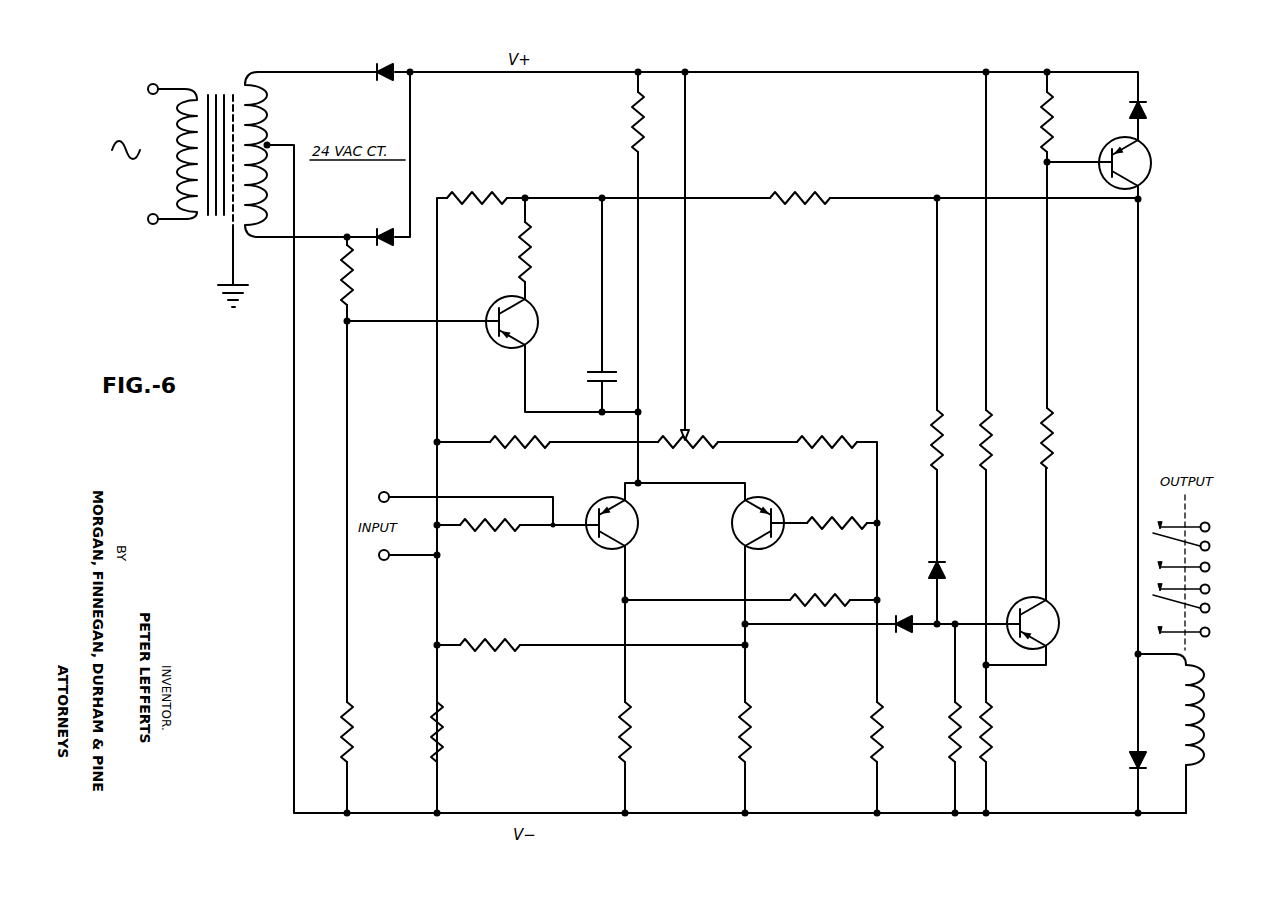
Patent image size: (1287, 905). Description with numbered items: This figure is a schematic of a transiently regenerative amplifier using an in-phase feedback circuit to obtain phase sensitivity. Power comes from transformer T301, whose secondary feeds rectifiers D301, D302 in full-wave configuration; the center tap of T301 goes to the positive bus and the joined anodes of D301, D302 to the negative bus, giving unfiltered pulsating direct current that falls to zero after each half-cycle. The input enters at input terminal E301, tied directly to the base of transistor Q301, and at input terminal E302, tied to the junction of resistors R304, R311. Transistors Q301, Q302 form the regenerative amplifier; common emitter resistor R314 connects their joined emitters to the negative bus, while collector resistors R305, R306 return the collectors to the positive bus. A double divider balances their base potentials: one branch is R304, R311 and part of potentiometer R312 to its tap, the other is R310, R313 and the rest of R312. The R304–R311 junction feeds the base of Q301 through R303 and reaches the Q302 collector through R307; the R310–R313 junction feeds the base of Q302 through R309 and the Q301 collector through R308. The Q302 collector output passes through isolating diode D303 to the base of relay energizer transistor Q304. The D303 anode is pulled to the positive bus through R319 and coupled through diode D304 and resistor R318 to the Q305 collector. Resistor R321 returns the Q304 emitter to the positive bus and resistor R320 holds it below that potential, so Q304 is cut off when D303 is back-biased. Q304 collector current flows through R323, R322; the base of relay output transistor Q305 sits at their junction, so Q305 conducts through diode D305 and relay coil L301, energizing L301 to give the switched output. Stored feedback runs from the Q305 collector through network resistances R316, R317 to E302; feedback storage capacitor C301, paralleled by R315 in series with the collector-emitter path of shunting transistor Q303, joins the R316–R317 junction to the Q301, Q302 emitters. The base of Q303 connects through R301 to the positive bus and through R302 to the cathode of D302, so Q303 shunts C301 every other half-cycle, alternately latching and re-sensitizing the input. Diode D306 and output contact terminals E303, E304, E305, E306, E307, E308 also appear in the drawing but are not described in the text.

The power transformer T301 is at (204, 87).
The power rectifier D301 is at (388, 84).
The power rectifier D302 is at (395, 230).
The isolating diode D303 is at (905, 648).
The diode D304 is at (930, 569).
The diode D305 is at (1153, 105).
The diode D306 is at (1131, 765).
The resistor R301 is at (353, 726).
The resistor R302 is at (353, 284).
The resistor R303 is at (478, 538).
The resistor R304 is at (448, 730).
The collector resistor R305 is at (635, 730).
The collector resistor R306 is at (760, 730).
The resistor R307 is at (478, 650).
The resistor R308 is at (845, 598).
The resistor R309 is at (856, 522).
The resistor R310 is at (880, 759).
The resistor R311 is at (505, 426).
The potentiometer R312 is at (690, 434).
The resistor R313 is at (852, 440).
The common emitter resistor R314 is at (632, 142).
The resistor R315 is at (532, 247).
The feedback network resistance R316 is at (828, 198).
The feedback network resistance R317 is at (500, 198).
The resistor R318 is at (930, 433).
The resistor R319 is at (950, 722).
The resistor R320 is at (993, 425).
The resistor R321 is at (992, 728).
The resistor R322 is at (1056, 421).
The resistor R323 is at (1042, 118).
The feedback storage capacitor C301 is at (600, 375).
The regenerative amplifier transistor Q301 is at (630, 523).
The regenerative amplifier transistor Q302 is at (739, 530).
The shunting transistor Q303 is at (532, 322).
The relay energizer transistor Q304 is at (1051, 623).
The relay output transistor Q305 is at (1114, 155).
The input terminal E301 is at (379, 494).
The input terminal E302 is at (383, 561).
The output relay contact terminal E303 is at (1210, 524).
The output relay contact terminal E304 is at (1210, 547).
The output relay contact terminal E305 is at (1210, 567).
The output relay contact terminal E306 is at (1210, 589).
The output relay contact terminal E307 is at (1210, 608).
The output relay contact terminal E308 is at (1210, 632).
The relay coil L301 is at (1200, 701).